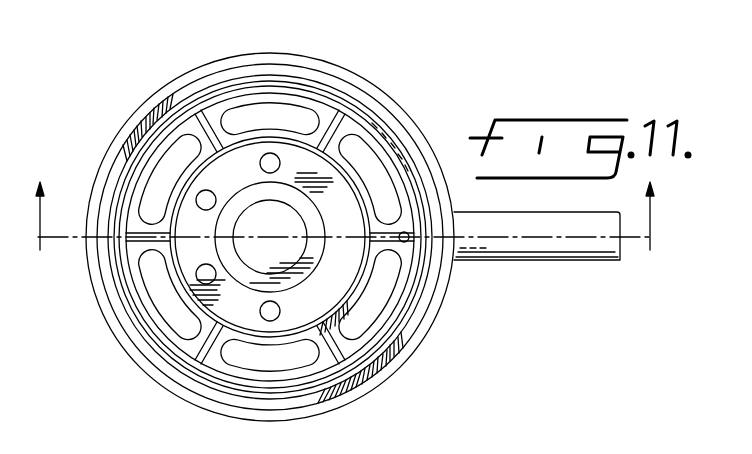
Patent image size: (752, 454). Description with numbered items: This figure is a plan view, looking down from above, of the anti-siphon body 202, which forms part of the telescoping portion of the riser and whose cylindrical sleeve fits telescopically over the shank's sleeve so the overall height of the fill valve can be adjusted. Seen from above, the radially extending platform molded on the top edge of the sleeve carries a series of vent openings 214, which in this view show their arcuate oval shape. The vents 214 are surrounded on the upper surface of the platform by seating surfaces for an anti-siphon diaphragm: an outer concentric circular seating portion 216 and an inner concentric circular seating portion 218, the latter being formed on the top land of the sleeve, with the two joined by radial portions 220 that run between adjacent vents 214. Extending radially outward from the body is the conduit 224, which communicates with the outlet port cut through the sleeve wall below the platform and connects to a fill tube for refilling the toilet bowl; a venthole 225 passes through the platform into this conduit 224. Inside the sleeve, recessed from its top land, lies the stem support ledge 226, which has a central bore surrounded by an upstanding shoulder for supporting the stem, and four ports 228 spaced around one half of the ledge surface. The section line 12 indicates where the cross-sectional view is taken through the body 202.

The section line 12- 12 is at (349, 246).
The anti-siphon body 202 is at (364, 406).
The vent openings 214 is at (345, 198).
The concentric circular seating portion 216 is at (183, 357).
The concentric circular seating portion 218 is at (352, 288).
The radial portions 220 is at (213, 137).
The radially-extending conduit 224 is at (580, 260).
The venthole 225 is at (409, 242).
The stem support ledge 226 is at (345, 198).
The ports 228 is at (199, 193).